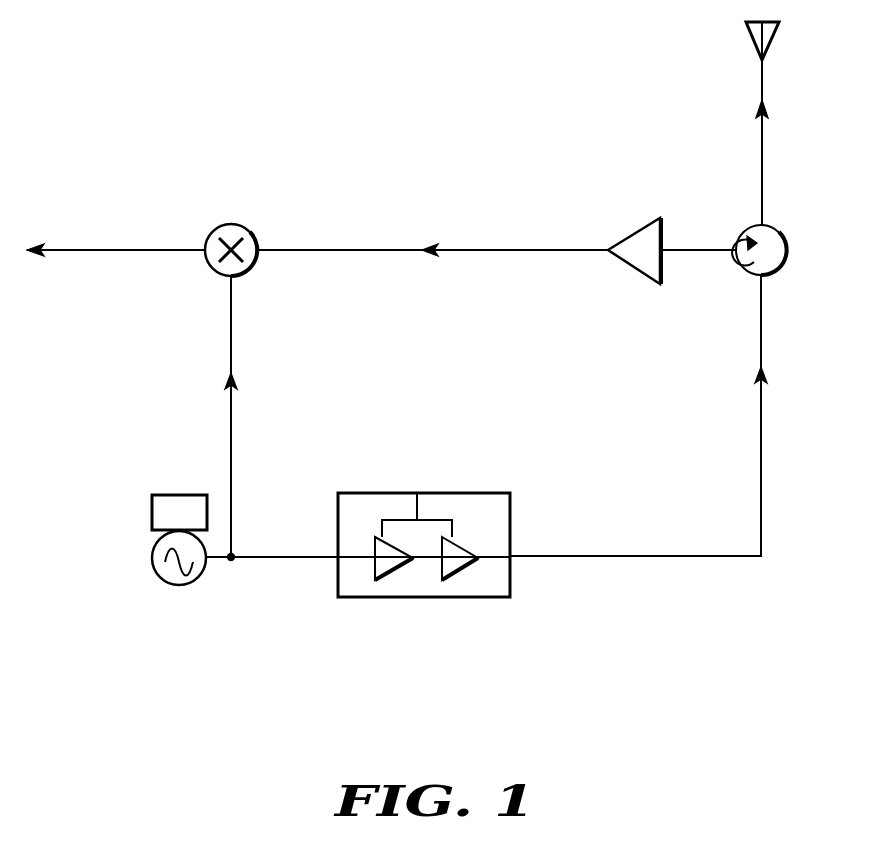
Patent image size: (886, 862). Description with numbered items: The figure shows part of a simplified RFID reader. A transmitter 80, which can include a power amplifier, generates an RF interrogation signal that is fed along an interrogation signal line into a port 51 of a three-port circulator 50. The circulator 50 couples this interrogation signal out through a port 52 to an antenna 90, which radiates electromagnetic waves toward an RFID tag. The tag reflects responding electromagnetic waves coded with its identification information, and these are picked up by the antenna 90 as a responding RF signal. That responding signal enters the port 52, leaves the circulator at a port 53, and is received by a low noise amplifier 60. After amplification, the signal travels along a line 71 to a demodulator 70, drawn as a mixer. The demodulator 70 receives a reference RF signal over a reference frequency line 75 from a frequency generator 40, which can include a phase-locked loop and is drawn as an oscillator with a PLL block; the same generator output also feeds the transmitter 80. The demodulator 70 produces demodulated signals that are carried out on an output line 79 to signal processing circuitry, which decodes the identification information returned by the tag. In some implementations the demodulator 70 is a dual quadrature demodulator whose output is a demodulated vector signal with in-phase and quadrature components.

The frequency generator 40 is at (179, 586).
The three-port circulator 50 is at (786, 252).
The port 51 is at (762, 312).
The port 52 is at (762, 186).
The port 53 is at (697, 252).
The low noise amplifier 60 is at (644, 229).
The demodulator 70 is at (233, 224).
The mixer RF input line 71 is at (306, 250).
The reference frequency input line 75 is at (231, 298).
The demodulated signals output line 79 is at (121, 284).
The transmitter 80 is at (417, 599).
The antenna 90 is at (780, 28).